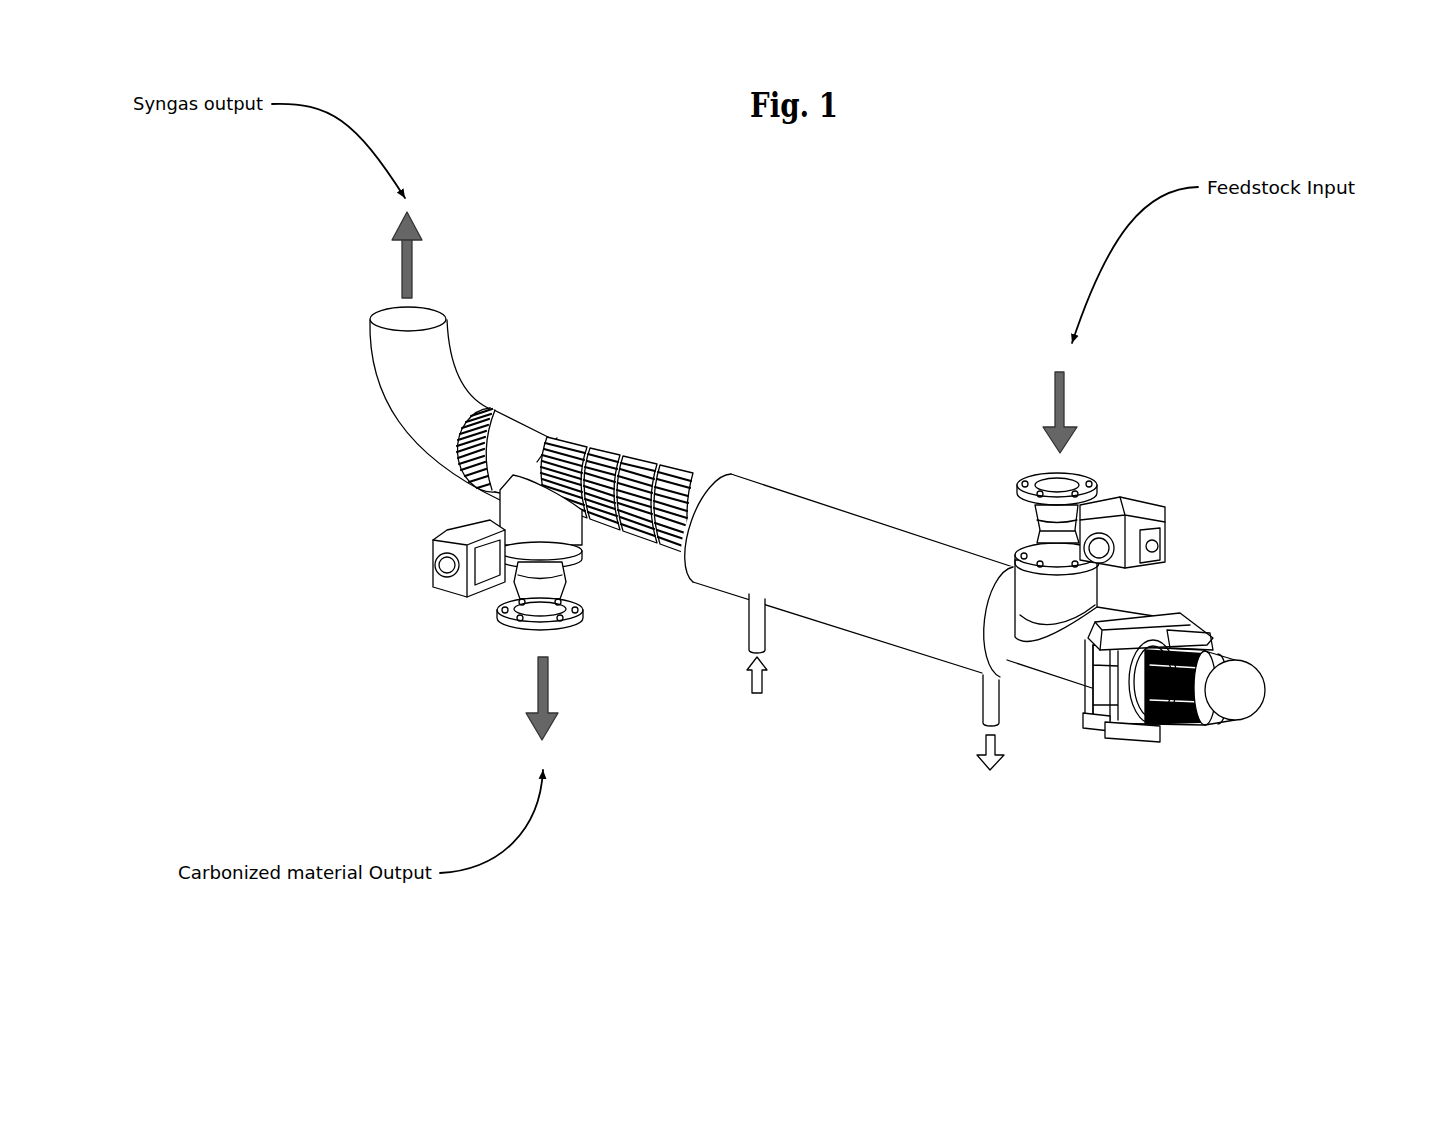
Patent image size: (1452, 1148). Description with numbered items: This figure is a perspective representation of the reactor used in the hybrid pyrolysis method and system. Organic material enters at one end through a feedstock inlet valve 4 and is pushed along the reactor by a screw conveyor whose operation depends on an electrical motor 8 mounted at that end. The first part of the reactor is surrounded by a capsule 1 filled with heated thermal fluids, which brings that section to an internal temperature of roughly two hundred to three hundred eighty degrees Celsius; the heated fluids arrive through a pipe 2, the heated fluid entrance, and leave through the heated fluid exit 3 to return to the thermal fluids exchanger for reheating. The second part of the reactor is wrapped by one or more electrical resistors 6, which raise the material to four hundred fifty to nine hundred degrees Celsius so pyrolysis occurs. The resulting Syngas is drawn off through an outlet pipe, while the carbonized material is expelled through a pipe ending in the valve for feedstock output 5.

The capsule 1 is at (856, 533).
The pipe 2 is at (752, 717).
The gas outlet stub 3 is at (990, 797).
The feedstock inlet valve 4 is at (1150, 503).
The valve for feedstock output 5 is at (487, 614).
The electrical resistors 6 is at (514, 408).
The electrical motor 8 is at (1246, 699).